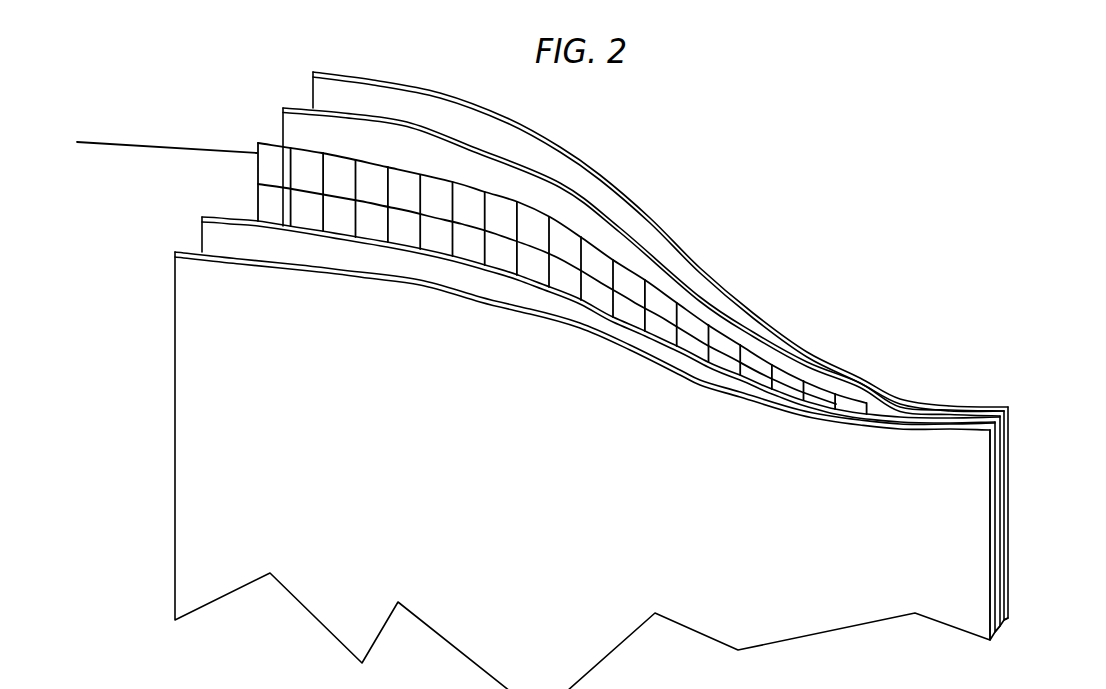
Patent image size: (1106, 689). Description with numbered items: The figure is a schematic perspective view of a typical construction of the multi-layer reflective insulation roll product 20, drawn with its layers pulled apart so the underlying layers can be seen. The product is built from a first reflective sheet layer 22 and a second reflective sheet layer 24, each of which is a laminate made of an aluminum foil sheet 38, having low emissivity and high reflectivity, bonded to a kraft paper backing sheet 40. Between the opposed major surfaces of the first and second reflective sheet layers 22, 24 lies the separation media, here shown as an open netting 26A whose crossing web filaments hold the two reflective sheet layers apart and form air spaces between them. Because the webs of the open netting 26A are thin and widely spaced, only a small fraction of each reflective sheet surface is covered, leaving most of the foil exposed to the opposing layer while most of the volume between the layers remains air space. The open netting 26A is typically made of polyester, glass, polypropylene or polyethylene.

The multi-layer reflective insulation roll product 20 is at (762, 146).
The first reflective sheet layer 22 is at (1010, 548).
The second reflective sheet layer 24 is at (1010, 416).
The open netting 26A is at (1009, 492).
The aluminum foil sheet 38 is at (283, 107).
The kraft paper backing sheet 40 is at (313, 73).